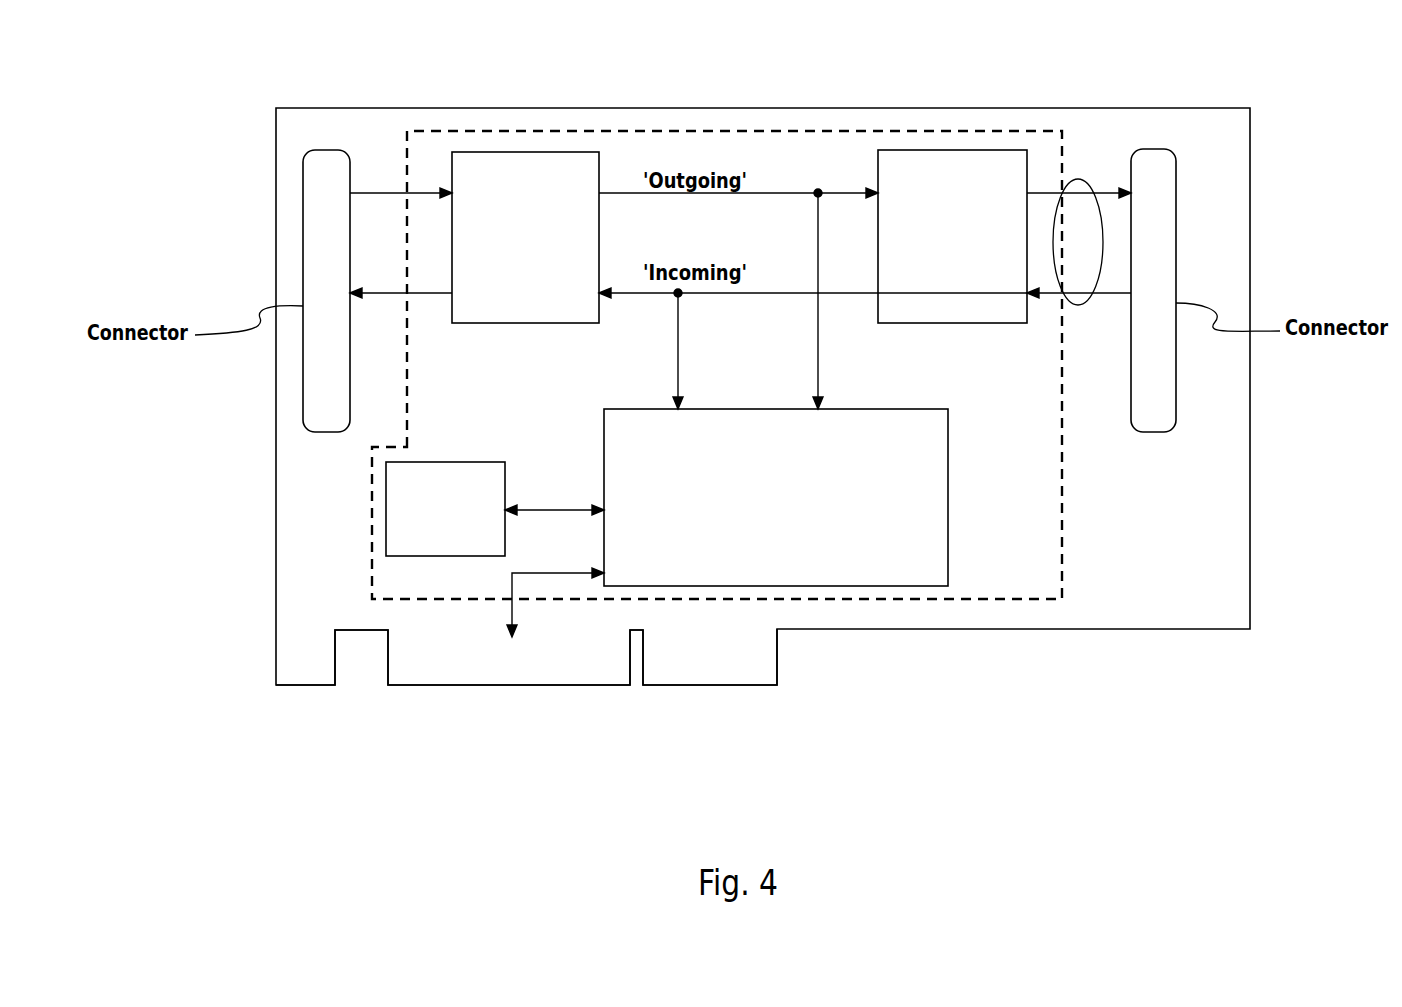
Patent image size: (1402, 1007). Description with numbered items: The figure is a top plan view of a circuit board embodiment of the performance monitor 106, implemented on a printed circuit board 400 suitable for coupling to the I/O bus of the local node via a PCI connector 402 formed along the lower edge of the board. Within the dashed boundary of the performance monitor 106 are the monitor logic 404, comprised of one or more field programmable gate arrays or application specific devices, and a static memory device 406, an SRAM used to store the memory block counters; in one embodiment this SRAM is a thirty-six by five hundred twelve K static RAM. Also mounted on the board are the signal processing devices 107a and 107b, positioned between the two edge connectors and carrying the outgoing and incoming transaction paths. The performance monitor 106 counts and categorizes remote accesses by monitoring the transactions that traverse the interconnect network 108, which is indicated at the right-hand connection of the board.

The printed circuit board 400 is at (1231, 617).
The PCI connector 402 is at (777, 645).
The monitor logic 404 is at (656, 577).
The static memory device 406 is at (430, 546).
The performance monitor 106 is at (1062, 545).
The signal processing device 107a is at (510, 313).
The signal processing device 107b is at (936, 315).
The interconnect network 108 is at (1078, 178).